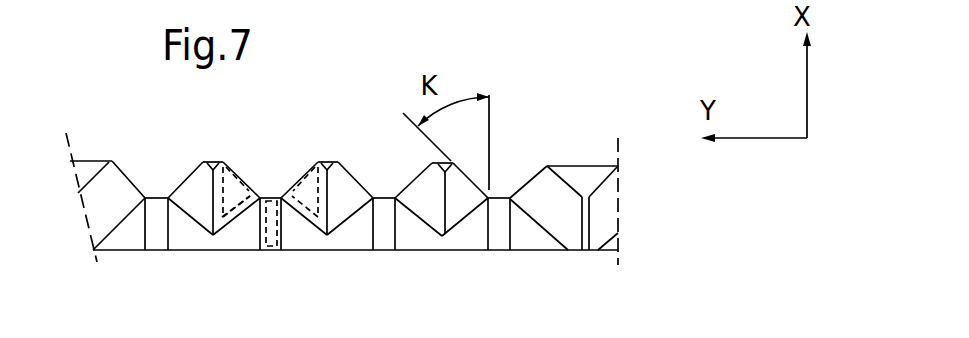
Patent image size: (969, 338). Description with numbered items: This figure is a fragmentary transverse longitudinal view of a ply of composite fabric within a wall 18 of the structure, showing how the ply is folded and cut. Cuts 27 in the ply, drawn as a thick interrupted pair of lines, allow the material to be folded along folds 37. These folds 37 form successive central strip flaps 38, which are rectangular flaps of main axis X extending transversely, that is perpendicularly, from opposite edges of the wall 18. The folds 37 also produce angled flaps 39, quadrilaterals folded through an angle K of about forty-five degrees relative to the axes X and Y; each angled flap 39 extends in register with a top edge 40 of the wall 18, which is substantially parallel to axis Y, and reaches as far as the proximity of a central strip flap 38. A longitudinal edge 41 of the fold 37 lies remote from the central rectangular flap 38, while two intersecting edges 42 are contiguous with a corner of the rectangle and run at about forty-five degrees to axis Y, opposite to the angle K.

The wall 18 is at (641, 150).
The cuts 27 is at (228, 212).
The folds 37 is at (374, 198).
The central strip flap 38 is at (269, 243).
The angled flap 39 is at (232, 182).
The top edge 40 is at (93, 160).
The longitudinal edge 41 is at (447, 218).
The intersecting edges 42 is at (538, 176).